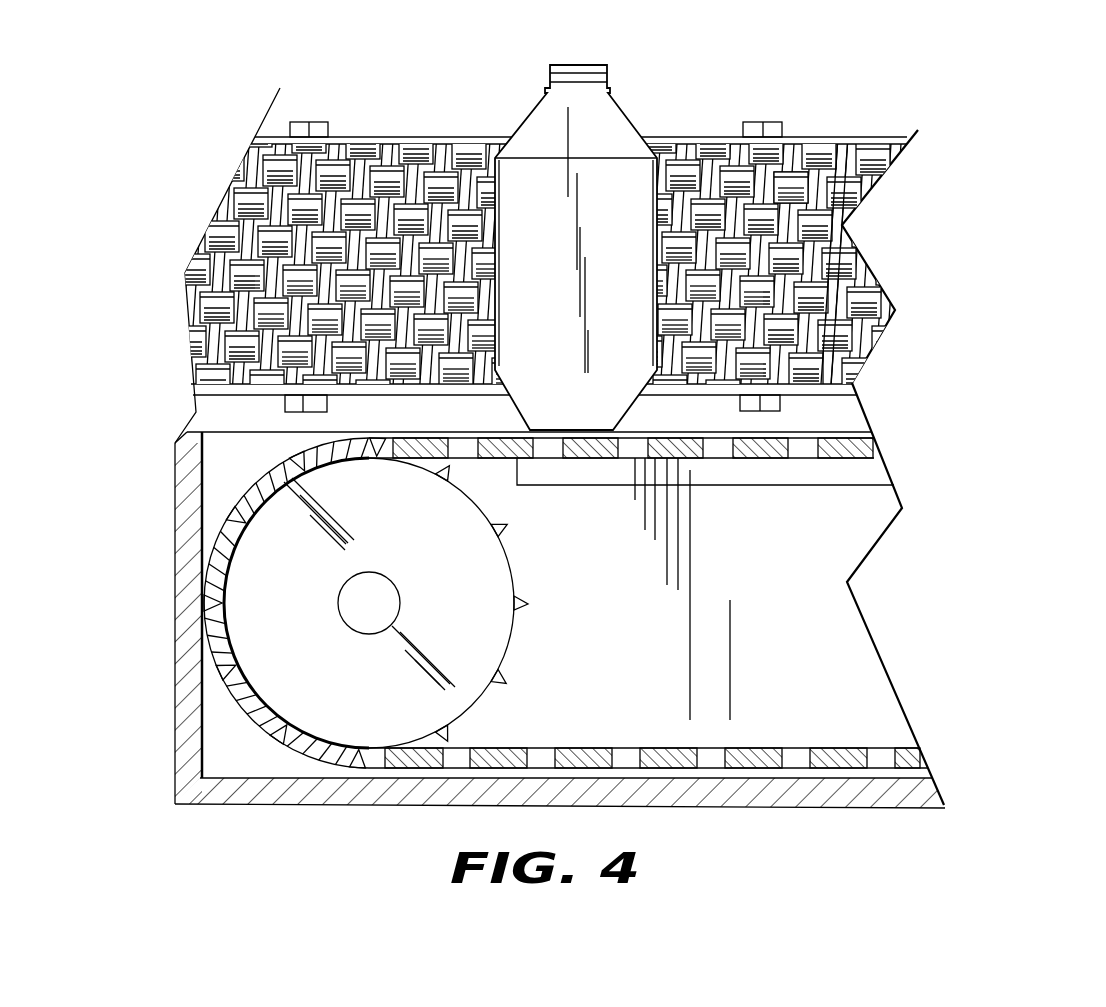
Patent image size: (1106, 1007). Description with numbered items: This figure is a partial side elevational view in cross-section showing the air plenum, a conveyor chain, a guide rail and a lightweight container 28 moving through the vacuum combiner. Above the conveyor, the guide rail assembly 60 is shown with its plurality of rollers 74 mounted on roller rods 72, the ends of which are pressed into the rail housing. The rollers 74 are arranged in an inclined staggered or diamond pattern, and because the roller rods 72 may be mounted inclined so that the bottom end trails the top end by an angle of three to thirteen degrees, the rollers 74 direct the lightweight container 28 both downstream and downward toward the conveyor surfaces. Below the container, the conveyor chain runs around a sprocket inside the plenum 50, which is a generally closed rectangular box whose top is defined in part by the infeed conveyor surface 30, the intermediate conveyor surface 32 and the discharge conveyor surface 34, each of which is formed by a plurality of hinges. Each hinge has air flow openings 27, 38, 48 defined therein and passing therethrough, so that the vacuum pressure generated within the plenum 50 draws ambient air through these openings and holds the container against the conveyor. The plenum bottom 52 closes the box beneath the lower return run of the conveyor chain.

The lightweight container 28 is at (527, 137).
The guide rail assembly 60 is at (686, 84).
The roller rod 72 is at (848, 160).
The roller 74 is at (782, 185).
The infeed conveyor surface 30 is at (628, 603).
The intermediate conveyor surface 32 is at (628, 603).
The discharge conveyor surface 34 is at (866, 462).
The plenum 50 is at (850, 608).
The air flow opening 27 is at (727, 762).
The air flow opening 38 is at (727, 762).
The air flow opening 48 is at (887, 752).
The plenum bottom 52 is at (922, 800).